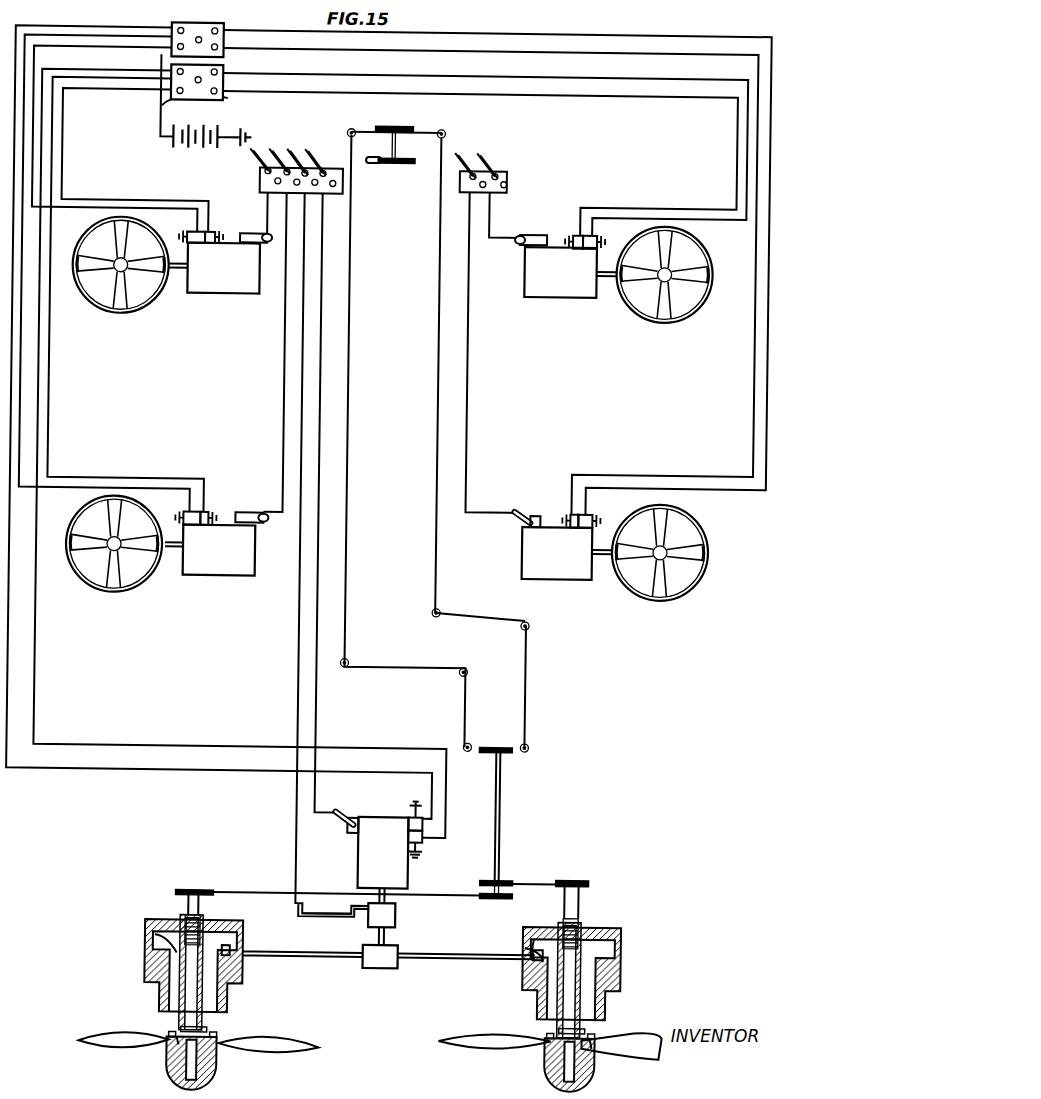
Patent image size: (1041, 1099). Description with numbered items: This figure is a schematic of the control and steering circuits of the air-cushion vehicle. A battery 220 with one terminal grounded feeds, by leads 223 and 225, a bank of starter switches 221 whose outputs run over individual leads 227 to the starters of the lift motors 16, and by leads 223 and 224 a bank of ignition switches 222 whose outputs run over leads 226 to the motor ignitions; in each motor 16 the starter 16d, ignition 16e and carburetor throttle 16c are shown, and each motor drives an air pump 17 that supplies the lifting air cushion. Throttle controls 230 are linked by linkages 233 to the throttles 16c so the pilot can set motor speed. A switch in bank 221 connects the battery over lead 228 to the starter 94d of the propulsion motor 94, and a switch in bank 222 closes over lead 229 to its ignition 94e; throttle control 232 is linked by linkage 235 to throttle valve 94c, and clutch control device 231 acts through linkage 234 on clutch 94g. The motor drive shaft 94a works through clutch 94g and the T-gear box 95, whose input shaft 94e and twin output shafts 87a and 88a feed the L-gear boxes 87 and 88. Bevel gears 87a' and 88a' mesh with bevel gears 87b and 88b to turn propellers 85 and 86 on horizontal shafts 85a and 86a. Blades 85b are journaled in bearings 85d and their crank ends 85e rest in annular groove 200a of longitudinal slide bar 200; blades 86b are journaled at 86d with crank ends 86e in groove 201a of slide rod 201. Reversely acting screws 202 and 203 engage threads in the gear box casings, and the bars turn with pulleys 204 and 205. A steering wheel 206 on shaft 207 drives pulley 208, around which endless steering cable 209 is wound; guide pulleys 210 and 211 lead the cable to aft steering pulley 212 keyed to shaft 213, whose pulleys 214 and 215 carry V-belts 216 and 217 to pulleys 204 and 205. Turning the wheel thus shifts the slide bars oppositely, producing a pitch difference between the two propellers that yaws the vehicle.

The bank of ignition switches 222 is at (218, 32).
The lead 224 is at (164, 70).
The bank of starter switches 221 is at (220, 103).
The lead 225 is at (172, 106).
The lead 223 is at (154, 126).
The battery 220 is at (194, 153).
The throttle controls 230 is at (265, 150).
The clutch control device 231 is at (304, 138).
The throttle control 232 is at (320, 150).
The linkages 233 is at (282, 199).
The pulley 208 is at (396, 128).
The horizontal guide pulleys 210 is at (441, 133).
The shaft 207 is at (398, 158).
The steering wheel 206 is at (366, 166).
The endless steering cable 209 is at (434, 192).
The leads 227 is at (58, 190).
The leads 226 is at (113, 214).
The lead 228 is at (37, 698).
The lead 229 is at (10, 662).
The linkage 234 is at (298, 612).
The linkage means 235 is at (320, 594).
The lift motor 16 is at (228, 280).
The throttle (carburetor) 16c is at (538, 235).
The starter 16d is at (188, 236).
The ignition 16e is at (210, 236).
The air pump 17 is at (117, 305).
The aft steering pulley 212 is at (496, 746).
The vertical guide pulleys 211 is at (532, 748).
The shaft 213 is at (505, 793).
The pulley 214 is at (512, 880).
The pulley 215 is at (500, 900).
The V-belt 216 is at (466, 894).
The V-belt 217 is at (570, 880).
The pulley 205 is at (594, 884).
The screw 203 is at (588, 926).
The pulley 204 is at (192, 893).
The screw 202 is at (190, 917).
The propulsion motor 94 is at (362, 875).
The drive shaft 94a is at (400, 909).
The throttle valve 94c is at (352, 836).
The starter 94d is at (428, 850).
The ignition (input shaft) 94e is at (415, 816).
The clutch 94g is at (372, 925).
The T-gear box 95 is at (389, 970).
The L-gear box 87 is at (150, 970).
The input shaft 87a is at (303, 944).
The bevel gear 87a' is at (138, 935).
The bevel gear 87b is at (233, 946).
The longitudinal slide bar 200 is at (186, 994).
The annular groove 200a is at (214, 1033).
The propeller 85 is at (133, 1055).
The propeller shaft 85a is at (175, 1028).
The blades 85b is at (275, 1058).
The bearings 85d is at (221, 1062).
The crank ends 85e is at (172, 1066).
The L-gear box 88 is at (628, 969).
The input shaft 88a is at (465, 972).
The bevel gear 88a' is at (535, 931).
The bevel gear 88b is at (534, 985).
The slide rod 201 is at (575, 994).
The annular groove 201a is at (590, 1030).
The propeller 86 is at (463, 1042).
The propeller shaft 86a is at (554, 1030).
The blades 86b is at (652, 1036).
The bearings 86d is at (550, 1046).
The crank ends 86e is at (598, 1056).